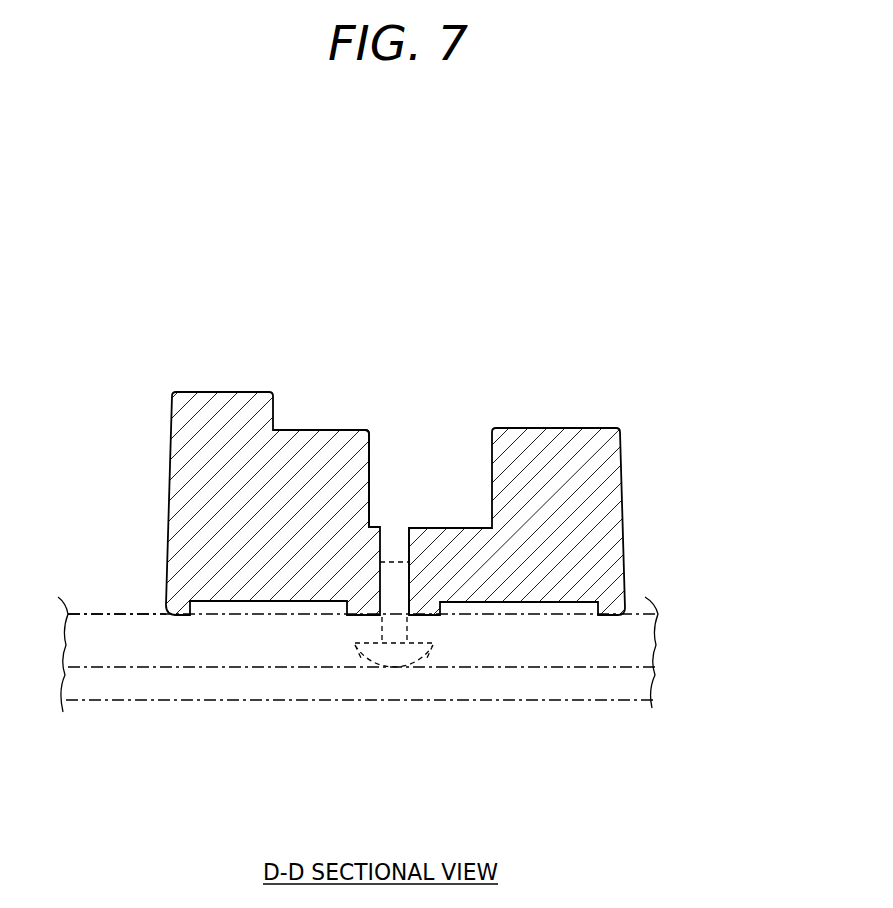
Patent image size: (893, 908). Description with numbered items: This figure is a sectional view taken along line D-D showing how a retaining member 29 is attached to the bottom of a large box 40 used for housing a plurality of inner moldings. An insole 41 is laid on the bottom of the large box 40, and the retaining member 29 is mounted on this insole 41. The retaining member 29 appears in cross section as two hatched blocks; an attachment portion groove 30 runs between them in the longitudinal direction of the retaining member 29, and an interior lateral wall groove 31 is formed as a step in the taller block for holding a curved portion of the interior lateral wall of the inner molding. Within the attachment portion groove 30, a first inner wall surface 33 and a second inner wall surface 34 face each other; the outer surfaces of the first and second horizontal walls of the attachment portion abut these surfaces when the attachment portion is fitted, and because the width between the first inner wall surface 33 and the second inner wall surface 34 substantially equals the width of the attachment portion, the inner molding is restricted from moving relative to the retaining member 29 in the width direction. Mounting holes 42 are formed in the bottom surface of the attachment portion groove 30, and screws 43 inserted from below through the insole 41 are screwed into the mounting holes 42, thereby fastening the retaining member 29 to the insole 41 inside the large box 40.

The retaining member 29 is at (475, 478).
The attachment portion groove 30 is at (449, 528).
The interior lateral wall groove 31 is at (315, 430).
The first inner wall surface 33 is at (490, 448).
The second inner wall surface 34 is at (369, 453).
The large box 40 is at (223, 700).
The insole 41 is at (97, 613).
The mounting holes 42 is at (409, 548).
The screws 43 is at (385, 667).